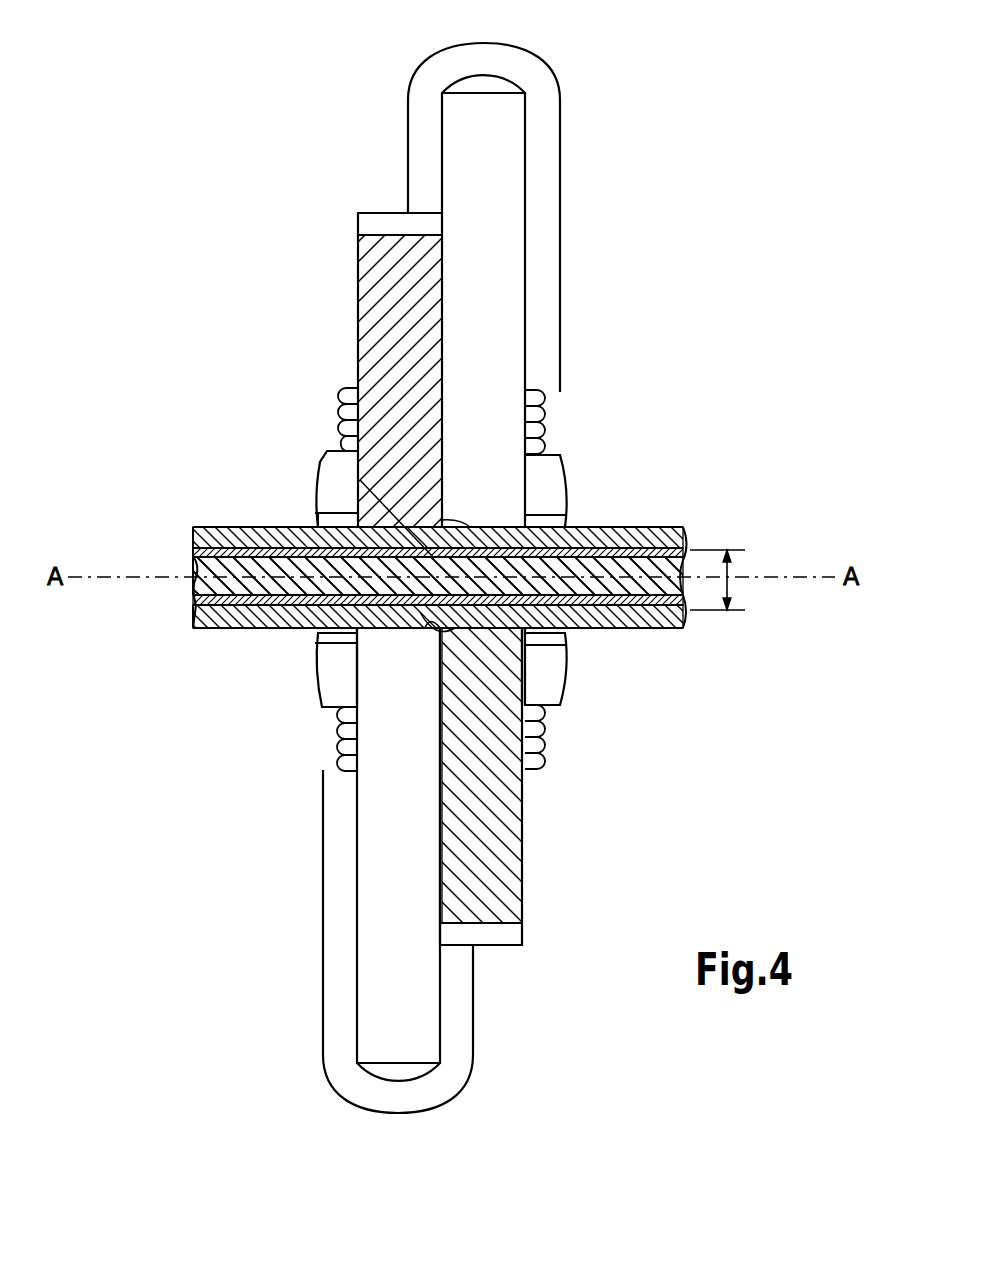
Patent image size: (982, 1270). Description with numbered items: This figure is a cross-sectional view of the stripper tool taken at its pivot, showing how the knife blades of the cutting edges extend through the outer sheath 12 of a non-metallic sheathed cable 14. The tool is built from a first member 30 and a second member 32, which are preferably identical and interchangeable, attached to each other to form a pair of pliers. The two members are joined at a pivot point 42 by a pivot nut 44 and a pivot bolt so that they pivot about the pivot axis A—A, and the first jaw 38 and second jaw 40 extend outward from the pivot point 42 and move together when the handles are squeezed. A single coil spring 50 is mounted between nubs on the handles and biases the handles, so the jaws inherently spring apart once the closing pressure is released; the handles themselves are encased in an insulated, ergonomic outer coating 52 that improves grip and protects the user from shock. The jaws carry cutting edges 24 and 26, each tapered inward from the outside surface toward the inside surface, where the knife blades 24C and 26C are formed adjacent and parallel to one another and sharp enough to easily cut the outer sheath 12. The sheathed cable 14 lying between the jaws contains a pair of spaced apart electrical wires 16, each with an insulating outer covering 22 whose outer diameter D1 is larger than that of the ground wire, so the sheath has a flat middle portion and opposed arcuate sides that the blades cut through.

The outer sheath 12 is at (252, 630).
The non-metallic sheathed cable 14 is at (665, 525).
The electrical wires 16 is at (200, 567).
The outer covering 22 is at (200, 632).
The cutting edge 24 is at (512, 662).
The knife blade 24C is at (433, 620).
The cutting edge 26 is at (313, 512).
The knife blade 26C is at (432, 624).
The first member 30 is at (505, 137).
The second member 32 is at (372, 1018).
The first jaw 38 is at (515, 857).
The second jaw 40 is at (367, 288).
The pivot point 42 is at (330, 470).
The pivot nut 44 is at (553, 490).
The coil spring 50 is at (547, 427).
The outer coating 52 is at (535, 78).
The outer diameter of the outer covering D1 is at (742, 587).